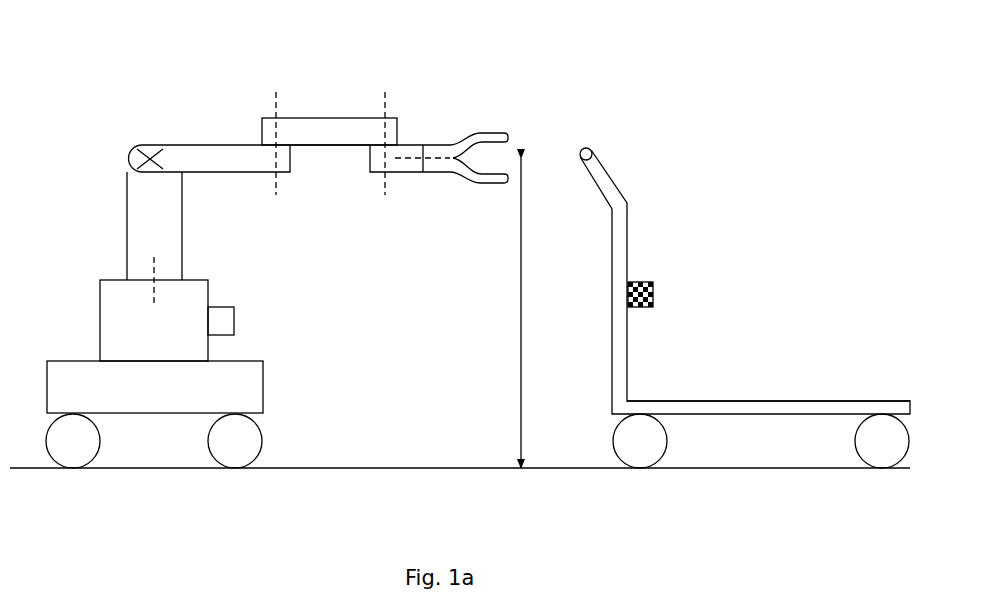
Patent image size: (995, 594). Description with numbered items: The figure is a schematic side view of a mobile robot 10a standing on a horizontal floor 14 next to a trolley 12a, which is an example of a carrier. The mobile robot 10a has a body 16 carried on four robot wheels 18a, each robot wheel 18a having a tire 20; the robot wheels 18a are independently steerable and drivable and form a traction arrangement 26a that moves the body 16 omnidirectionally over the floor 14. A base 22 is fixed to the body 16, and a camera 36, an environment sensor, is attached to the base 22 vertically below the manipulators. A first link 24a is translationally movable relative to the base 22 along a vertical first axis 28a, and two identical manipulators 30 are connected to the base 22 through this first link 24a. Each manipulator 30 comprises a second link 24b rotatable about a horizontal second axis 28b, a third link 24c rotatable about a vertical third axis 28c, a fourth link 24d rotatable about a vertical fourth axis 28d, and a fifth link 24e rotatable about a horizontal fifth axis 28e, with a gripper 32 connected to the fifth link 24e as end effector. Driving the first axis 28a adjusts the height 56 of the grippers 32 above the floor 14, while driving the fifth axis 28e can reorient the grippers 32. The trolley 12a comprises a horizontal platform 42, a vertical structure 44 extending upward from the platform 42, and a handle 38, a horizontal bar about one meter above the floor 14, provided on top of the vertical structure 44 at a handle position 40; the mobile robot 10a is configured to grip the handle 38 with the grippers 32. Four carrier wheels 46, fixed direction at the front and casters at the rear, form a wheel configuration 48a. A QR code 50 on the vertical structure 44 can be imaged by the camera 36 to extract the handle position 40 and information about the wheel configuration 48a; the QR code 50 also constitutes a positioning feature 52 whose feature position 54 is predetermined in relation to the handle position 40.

The mobile robot 10a is at (88, 66).
The trolley 12a is at (763, 322).
The floor 14 is at (447, 465).
The body 16 is at (167, 400).
The robot wheel 18a is at (235, 442).
The tire 20 is at (262, 457).
The base 22 is at (167, 343).
The first link 24a is at (140, 227).
The second link 24b is at (197, 158).
The third link 24c is at (327, 133).
The fourth link 24d is at (405, 150).
The fifth link 24e is at (437, 150).
The traction arrangement 26a is at (288, 447).
The first axis 28a is at (156, 273).
The second axis 28b is at (132, 153).
The third axis 28c is at (276, 195).
The fourth axis 28d is at (385, 197).
The fifth axis 28e is at (415, 160).
The manipulator 30 is at (265, 66).
The gripper 32 is at (495, 140).
The camera 36 is at (222, 320).
The handle 38 is at (592, 143).
The handle position 40 is at (593, 154).
The platform 42 is at (822, 405).
The vertical structure 44 is at (618, 357).
The carrier wheel 46 is at (882, 453).
The wheel configuration 48a is at (605, 435).
The QR code 50 is at (638, 280).
The positioning feature 52 is at (653, 279).
The feature position 54 is at (655, 293).
The height 56 is at (539, 313).